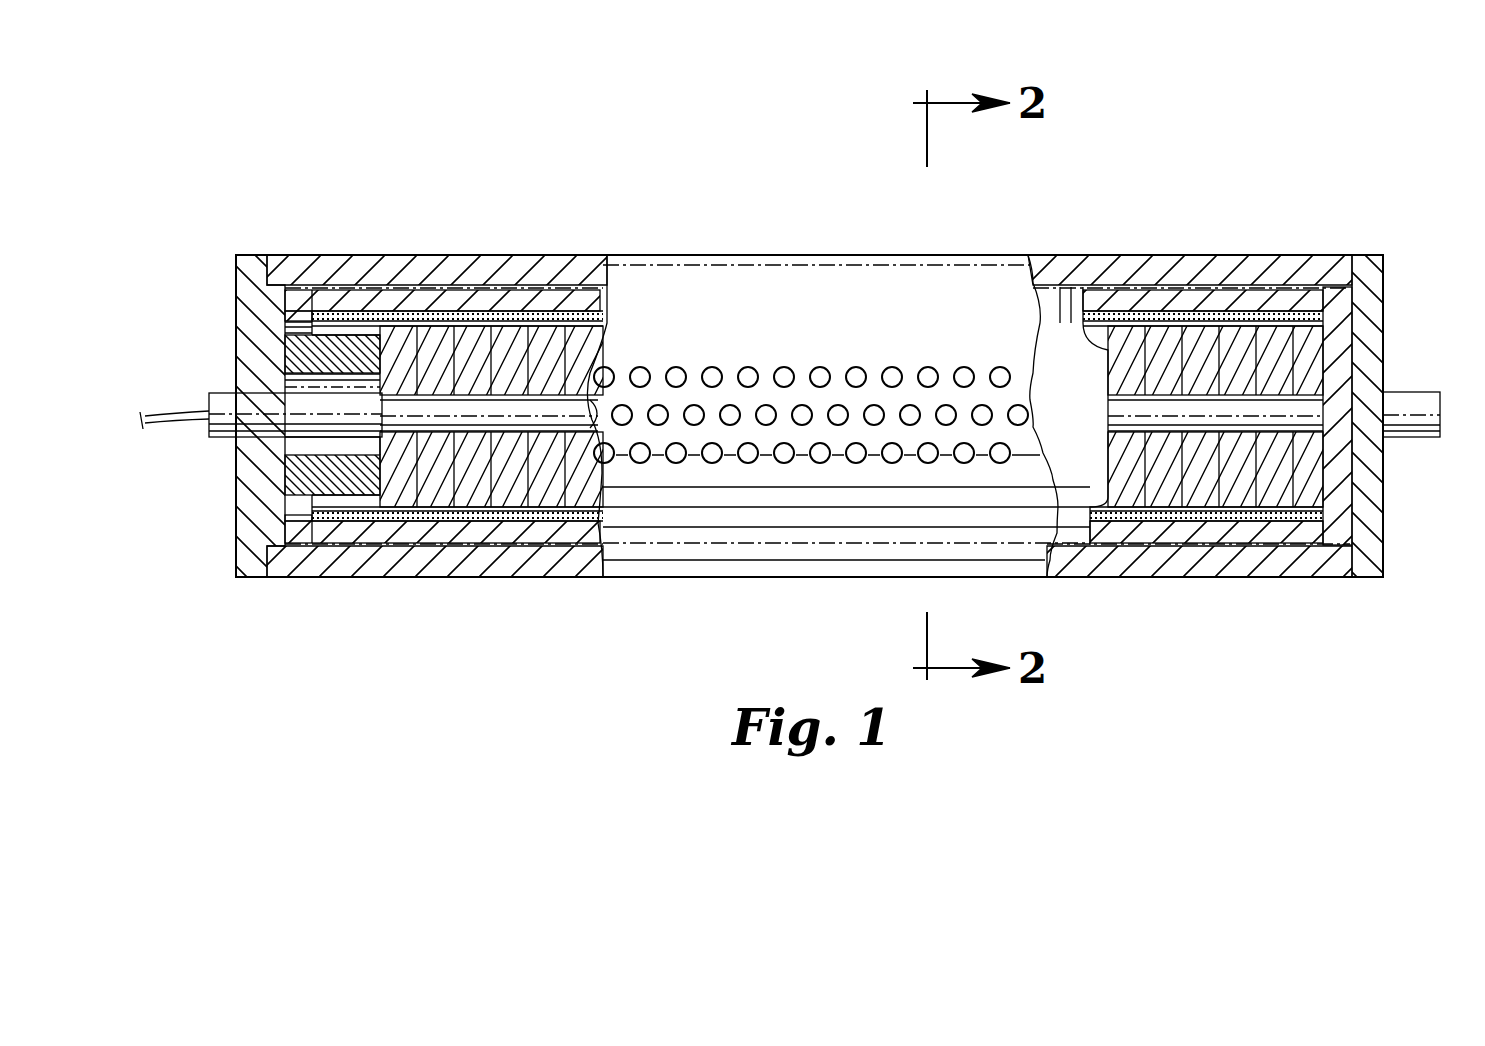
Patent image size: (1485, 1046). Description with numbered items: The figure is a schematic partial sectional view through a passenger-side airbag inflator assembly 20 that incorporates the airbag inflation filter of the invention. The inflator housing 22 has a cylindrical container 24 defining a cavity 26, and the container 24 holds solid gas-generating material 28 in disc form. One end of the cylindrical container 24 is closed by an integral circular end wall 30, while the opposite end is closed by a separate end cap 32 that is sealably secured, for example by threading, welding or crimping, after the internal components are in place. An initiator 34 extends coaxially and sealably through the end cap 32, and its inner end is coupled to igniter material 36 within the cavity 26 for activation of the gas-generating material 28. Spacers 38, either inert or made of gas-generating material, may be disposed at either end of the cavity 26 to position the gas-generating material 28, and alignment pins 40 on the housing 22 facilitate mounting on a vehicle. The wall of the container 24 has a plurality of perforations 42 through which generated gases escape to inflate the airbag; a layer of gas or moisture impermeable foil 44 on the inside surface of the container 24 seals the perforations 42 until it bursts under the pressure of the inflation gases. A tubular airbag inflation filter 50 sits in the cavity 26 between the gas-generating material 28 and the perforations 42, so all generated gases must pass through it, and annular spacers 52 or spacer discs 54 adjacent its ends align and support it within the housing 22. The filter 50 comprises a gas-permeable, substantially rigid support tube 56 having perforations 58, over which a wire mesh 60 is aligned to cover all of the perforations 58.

The airbag inflator assembly 20 is at (1322, 137).
The inflator housing 22 is at (481, 250).
The cylindrical container 24 is at (583, 262).
The cavity 26 is at (348, 318).
The solid gas-generating material 28 is at (527, 492).
The integral circular end wall 30 is at (1372, 535).
The end cap 32 is at (245, 533).
The initiator 34 is at (223, 402).
The igniter material 36 is at (468, 527).
The spacers 38 is at (305, 477).
The alignment pins 40 is at (1420, 392).
The perforations 42 is at (785, 372).
The foil 44 is at (1057, 305).
The tubular airbag inflation filter 50 is at (1245, 292).
The annular spacers 52 is at (293, 300).
The spacer discs 54 is at (1345, 300).
The support tube 56 is at (1118, 310).
The perforations 58 is at (418, 505).
The wire mesh 60 is at (437, 312).